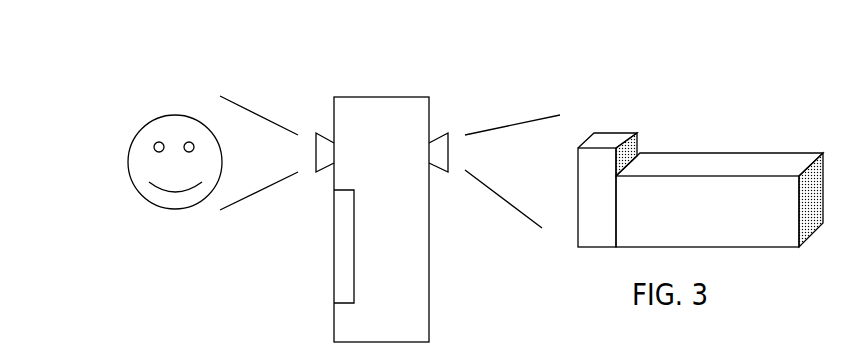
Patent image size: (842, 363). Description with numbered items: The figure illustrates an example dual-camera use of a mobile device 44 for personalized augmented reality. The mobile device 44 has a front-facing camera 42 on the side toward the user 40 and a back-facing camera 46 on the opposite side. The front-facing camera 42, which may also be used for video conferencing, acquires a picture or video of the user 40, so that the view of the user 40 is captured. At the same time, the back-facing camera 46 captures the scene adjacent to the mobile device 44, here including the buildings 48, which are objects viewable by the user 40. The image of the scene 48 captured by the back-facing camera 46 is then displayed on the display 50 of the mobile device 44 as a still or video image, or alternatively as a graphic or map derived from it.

The user 40 is at (175, 210).
The front-facing camera 42 is at (330, 130).
The mobile device 44 is at (382, 95).
The back-facing camera 46 is at (438, 132).
The buildings 48 is at (732, 152).
The display 50 is at (333, 247).